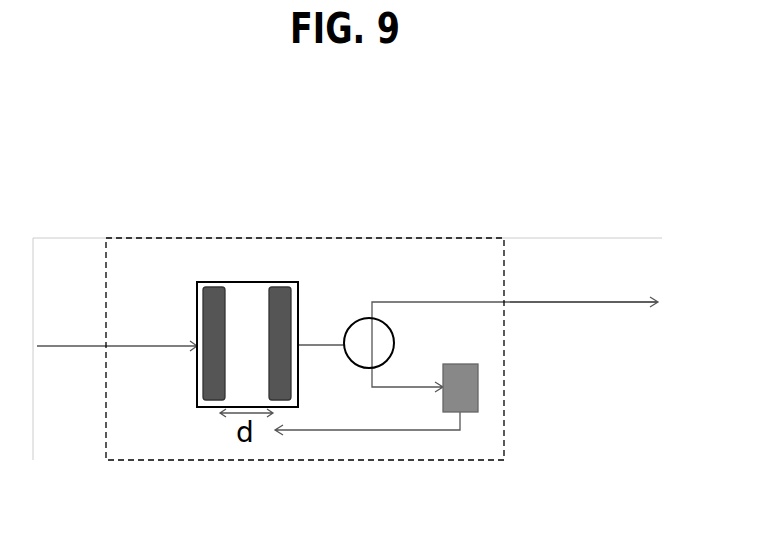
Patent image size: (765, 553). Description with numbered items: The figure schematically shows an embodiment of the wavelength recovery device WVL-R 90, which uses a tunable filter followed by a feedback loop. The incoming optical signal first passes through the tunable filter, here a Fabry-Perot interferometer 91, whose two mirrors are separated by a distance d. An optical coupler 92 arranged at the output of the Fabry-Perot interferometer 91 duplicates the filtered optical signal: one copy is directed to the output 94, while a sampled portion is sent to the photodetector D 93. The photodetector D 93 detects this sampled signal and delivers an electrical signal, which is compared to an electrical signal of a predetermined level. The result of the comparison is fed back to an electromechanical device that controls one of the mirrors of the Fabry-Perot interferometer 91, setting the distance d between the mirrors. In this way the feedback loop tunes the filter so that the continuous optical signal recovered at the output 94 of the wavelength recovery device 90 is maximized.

The wavelength recovery device 90 is at (480, 238).
The Fabry-Perot interferometer 91 is at (252, 280).
The optical coupler 92 is at (357, 318).
The photodetector 93 is at (478, 390).
The output 94 is at (528, 303).